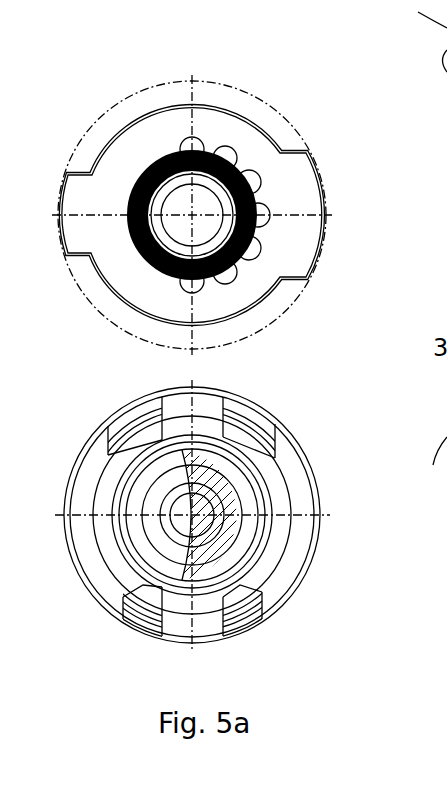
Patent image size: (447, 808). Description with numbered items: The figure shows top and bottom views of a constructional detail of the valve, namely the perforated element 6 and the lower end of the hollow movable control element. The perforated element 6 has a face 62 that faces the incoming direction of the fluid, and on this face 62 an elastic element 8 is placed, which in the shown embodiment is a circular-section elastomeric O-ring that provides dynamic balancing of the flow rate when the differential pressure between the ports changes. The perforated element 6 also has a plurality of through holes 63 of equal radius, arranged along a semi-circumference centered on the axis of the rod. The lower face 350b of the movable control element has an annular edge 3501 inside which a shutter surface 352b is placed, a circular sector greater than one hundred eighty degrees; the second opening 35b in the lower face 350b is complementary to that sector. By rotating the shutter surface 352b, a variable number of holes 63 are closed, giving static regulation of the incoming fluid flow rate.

The perforated element 6 is at (217, 192).
The face of the perforated element 62 is at (317, 186).
The through holes 63 is at (272, 221).
The elastic element 8 is at (125, 243).
The second opening 35b is at (203, 502).
The lower face 350b is at (264, 448).
The annular edge 3501 is at (265, 487).
The shutter surface 352b is at (250, 560).